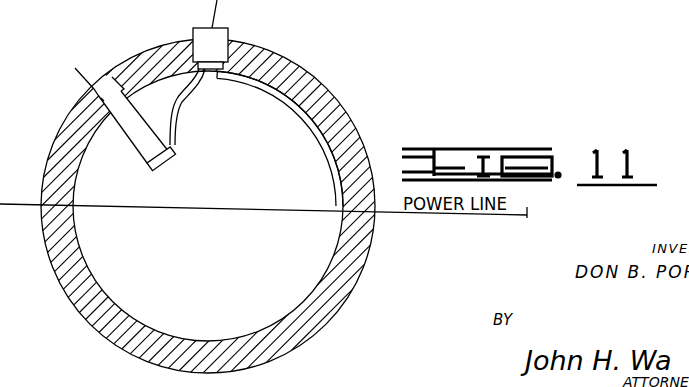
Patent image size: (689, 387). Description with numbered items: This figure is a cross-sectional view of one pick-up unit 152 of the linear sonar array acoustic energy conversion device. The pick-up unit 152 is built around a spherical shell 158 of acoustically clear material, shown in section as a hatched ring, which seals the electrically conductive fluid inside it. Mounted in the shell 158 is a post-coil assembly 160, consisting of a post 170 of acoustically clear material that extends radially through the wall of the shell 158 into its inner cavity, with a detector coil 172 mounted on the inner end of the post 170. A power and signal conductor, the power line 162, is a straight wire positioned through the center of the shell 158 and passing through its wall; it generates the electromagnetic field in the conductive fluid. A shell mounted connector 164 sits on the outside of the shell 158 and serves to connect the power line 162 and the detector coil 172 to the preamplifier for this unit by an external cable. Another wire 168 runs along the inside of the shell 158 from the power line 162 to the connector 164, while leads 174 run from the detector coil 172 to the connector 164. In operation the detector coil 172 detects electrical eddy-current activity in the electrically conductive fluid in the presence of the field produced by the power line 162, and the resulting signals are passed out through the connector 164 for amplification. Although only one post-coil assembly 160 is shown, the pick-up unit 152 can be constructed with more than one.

The pick-up unit 152 is at (375, 81).
The spherical shell 158 is at (346, 280).
The post-coil assembly 160 is at (84, 89).
The power and signal conductor (power line) 162 is at (233, 203).
The shell mounted connector 164 is at (227, 39).
The wire 168 is at (320, 141).
The post 170 is at (138, 148).
The detector coil 172 is at (165, 158).
The leads 174 is at (184, 96).